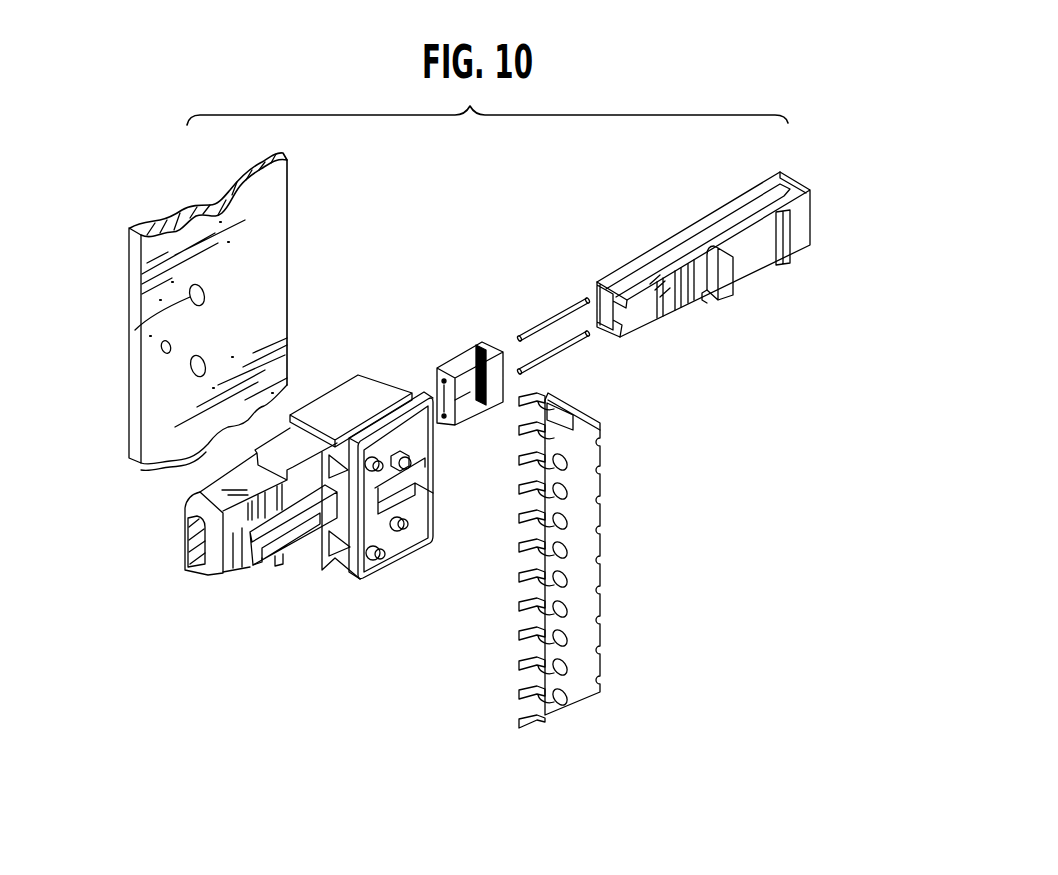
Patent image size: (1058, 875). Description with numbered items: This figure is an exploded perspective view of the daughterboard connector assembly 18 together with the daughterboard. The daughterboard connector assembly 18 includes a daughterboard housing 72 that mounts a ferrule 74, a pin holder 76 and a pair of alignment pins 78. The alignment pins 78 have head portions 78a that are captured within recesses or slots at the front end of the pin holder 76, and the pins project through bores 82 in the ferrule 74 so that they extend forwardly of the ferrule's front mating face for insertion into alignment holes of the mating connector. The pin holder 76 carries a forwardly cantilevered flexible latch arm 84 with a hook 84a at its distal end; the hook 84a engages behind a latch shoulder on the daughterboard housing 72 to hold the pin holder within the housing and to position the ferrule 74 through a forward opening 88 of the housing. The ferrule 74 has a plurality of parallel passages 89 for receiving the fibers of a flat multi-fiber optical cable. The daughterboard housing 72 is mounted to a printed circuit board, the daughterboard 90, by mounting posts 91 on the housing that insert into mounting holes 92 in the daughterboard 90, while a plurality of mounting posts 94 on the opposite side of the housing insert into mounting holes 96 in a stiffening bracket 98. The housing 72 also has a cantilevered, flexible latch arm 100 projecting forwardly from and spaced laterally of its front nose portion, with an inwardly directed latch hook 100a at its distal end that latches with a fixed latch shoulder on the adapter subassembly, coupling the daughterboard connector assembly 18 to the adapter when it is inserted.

The daughterboard connector assembly 18 is at (545, 263).
The daughterboard housing 72 is at (366, 395).
The ferrule 74 is at (463, 363).
The pin holder 76 is at (697, 255).
The alignment pins 78 is at (555, 360).
The head portions 78a is at (587, 298).
The bores 82 is at (441, 380).
The flexible latch arm 84 is at (760, 265).
The hook 84a is at (705, 295).
The forward opening 88 is at (185, 551).
The parallel passages 89 is at (442, 392).
The printed circuit board (daughterboard) 90 is at (267, 242).
The mounting posts 91 is at (337, 382).
The mounting holes 92 is at (190, 368).
The mounting posts 94 is at (370, 473).
The mounting holes 96 is at (572, 610).
The stiffening bracket 98 is at (587, 517).
The flexible latch arm 100 is at (300, 512).
The latch hook 100a is at (257, 512).